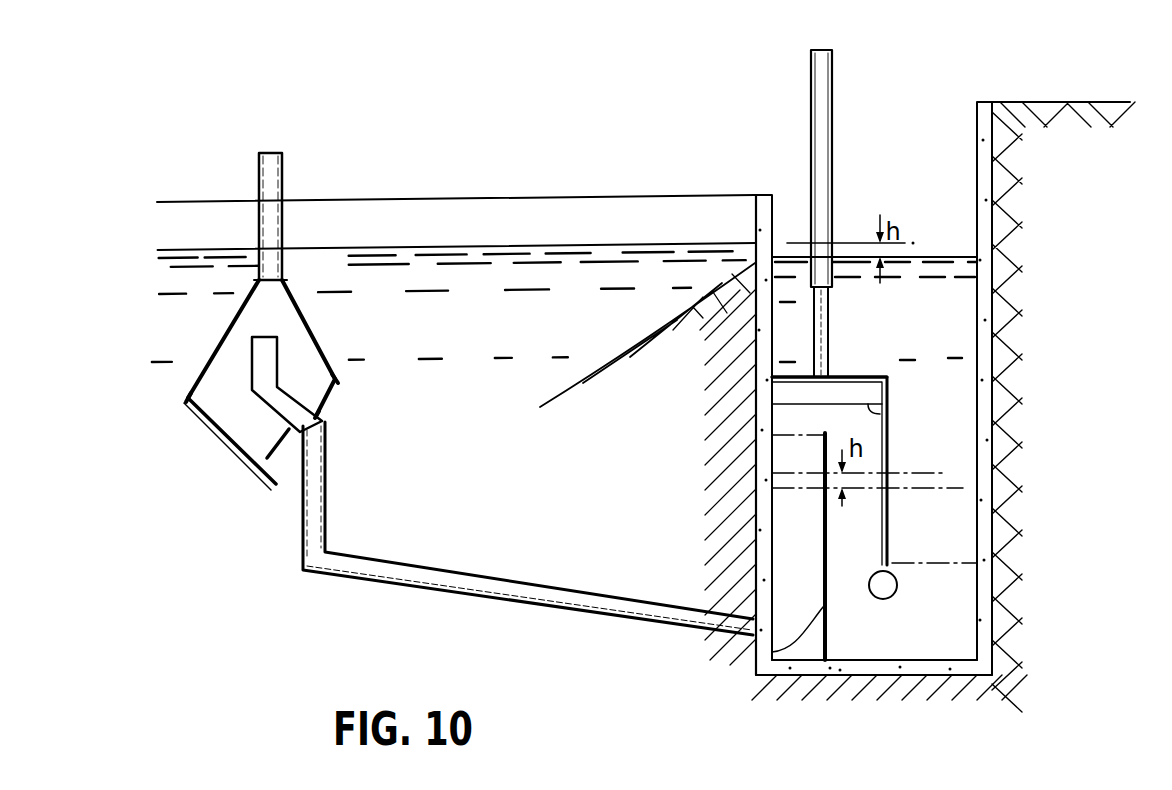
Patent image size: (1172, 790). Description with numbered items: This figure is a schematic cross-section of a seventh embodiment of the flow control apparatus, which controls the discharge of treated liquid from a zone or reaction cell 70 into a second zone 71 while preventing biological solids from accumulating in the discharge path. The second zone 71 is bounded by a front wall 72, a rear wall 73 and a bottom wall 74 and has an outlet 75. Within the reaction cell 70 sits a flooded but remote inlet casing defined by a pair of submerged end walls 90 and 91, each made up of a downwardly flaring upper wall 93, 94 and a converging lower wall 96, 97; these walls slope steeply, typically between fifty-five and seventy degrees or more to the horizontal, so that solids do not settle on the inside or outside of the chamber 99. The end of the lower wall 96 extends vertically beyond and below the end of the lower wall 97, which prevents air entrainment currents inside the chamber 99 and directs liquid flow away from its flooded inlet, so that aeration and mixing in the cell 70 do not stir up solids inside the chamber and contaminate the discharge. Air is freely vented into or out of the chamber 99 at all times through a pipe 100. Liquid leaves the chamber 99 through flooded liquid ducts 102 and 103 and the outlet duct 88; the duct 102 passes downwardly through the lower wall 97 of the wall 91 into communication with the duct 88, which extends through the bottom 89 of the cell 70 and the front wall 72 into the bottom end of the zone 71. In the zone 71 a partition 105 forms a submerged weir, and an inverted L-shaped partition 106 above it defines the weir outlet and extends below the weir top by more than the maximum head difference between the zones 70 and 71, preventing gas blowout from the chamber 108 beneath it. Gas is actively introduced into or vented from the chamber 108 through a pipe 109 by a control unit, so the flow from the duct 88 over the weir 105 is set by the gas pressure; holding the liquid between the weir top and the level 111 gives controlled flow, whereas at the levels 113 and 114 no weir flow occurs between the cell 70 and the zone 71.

The reaction cell 70 is at (463, 338).
The second zone 71 is at (925, 305).
The front wall 72 is at (764, 200).
The rear wall 73 is at (980, 102).
The bottom wall 74 is at (898, 658).
The outlet 75 is at (883, 600).
The outlet duct 88 is at (537, 585).
The bottom of the cell 89 is at (620, 355).
The wall 90 is at (186, 401).
The wall 91 is at (337, 379).
The upper wall 93 is at (228, 331).
The upper wall 94 is at (318, 338).
The lower wall 96 is at (238, 448).
The lower wall 97 is at (323, 410).
The chamber 99 is at (281, 295).
The pipe 100 is at (282, 181).
The liquid duct 102 is at (272, 458).
The liquid duct 103 is at (252, 366).
The partition 105 is at (772, 652).
The inverted L-shaped partition 106 is at (888, 460).
The chamber 108 is at (845, 393).
The pipe 109 is at (811, 72).
The level 111 is at (885, 413).
The level 113 is at (808, 476).
The level 114 is at (857, 495).